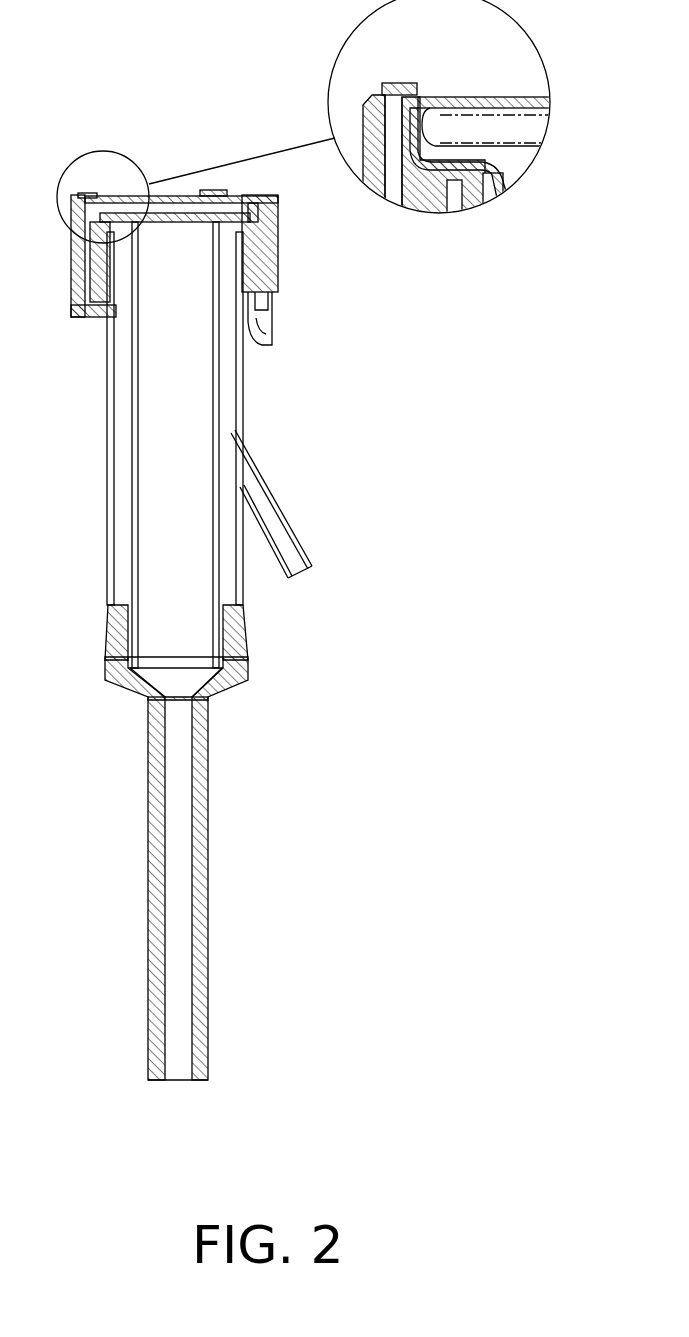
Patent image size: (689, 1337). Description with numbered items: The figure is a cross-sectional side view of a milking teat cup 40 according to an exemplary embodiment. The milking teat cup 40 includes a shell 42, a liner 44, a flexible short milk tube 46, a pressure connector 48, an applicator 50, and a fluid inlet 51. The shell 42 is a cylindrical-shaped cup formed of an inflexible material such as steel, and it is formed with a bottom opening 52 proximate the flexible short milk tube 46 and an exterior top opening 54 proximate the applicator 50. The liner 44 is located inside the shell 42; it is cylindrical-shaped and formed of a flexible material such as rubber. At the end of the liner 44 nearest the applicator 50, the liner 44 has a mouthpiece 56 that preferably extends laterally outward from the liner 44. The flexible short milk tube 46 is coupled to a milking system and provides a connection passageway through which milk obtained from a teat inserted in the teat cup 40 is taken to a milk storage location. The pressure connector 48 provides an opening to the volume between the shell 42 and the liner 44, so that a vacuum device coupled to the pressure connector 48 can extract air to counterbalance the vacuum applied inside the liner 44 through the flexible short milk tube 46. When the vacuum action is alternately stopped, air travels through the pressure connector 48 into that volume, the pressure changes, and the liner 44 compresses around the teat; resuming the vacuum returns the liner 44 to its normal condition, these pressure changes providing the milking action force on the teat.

The milking teat cup 40 is at (246, 611).
The shell 42 is at (107, 422).
The liner 44 is at (221, 393).
The flexible short milk tube 46 is at (207, 826).
The pressure connector 48 is at (270, 484).
The applicator 50 is at (278, 258).
The fluid inlet 51 is at (272, 340).
The bottom opening 52 is at (176, 697).
The exterior top opening 54 is at (187, 184).
The mouthpiece 56 is at (477, 98).